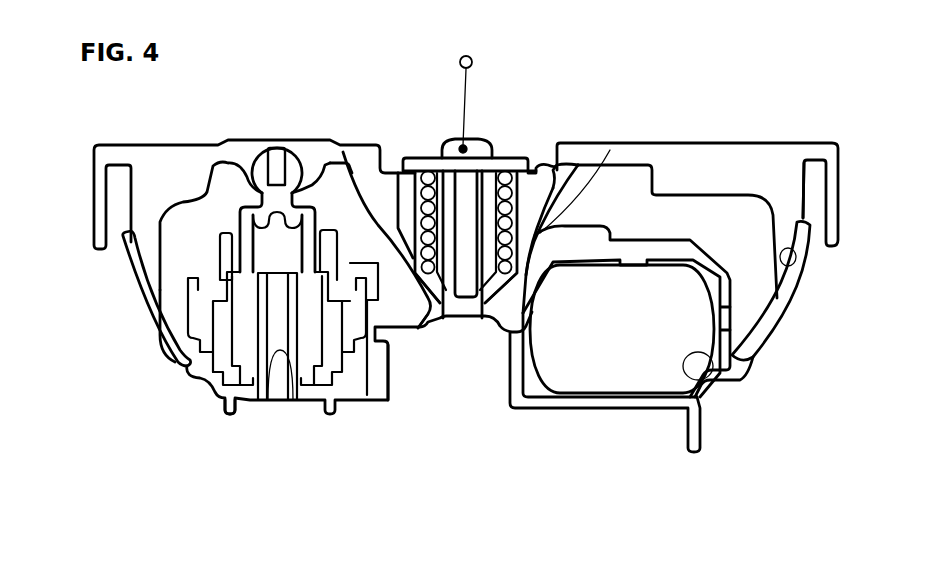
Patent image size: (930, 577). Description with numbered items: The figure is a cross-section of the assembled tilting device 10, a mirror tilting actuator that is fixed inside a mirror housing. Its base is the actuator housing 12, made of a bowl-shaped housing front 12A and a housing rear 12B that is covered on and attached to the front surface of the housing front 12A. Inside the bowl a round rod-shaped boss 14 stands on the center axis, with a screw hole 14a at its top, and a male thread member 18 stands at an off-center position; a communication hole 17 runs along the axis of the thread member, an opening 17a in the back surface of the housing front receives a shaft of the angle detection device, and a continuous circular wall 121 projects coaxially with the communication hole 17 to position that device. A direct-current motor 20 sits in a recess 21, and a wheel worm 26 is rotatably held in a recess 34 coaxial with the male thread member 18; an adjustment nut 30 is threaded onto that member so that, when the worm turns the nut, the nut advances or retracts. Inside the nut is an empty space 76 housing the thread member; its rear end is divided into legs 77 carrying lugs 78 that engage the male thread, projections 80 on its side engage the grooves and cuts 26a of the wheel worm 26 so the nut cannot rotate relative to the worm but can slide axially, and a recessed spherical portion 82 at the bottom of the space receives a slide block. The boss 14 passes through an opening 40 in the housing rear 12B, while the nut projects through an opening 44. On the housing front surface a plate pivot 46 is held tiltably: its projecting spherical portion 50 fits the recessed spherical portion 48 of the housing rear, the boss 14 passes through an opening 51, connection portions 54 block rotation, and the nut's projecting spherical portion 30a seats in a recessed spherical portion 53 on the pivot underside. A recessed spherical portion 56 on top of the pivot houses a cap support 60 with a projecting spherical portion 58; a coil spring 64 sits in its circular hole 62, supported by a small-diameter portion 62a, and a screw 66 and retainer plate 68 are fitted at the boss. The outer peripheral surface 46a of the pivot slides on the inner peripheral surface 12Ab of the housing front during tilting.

The tilting device 10 is at (791, 74).
The actuator housing 12 is at (708, 309).
The housing front 12A is at (763, 352).
The housing rear 12B is at (728, 285).
The inner peripheral surface 12Ab is at (794, 268).
The boss 14 is at (445, 220).
The screw hole 14a is at (470, 300).
The communication hole 17 is at (278, 400).
The opening 17a is at (278, 352).
The male thread member 18 is at (306, 400).
The motor 20 is at (617, 352).
The recess 21 is at (712, 377).
The wheel worm 26 is at (193, 386).
The grooves and cuts 26a is at (336, 290).
The adjustment nut 30 is at (247, 242).
The projecting spherical portion 30a is at (288, 167).
The recess 34 is at (222, 417).
The opening 40 is at (433, 333).
The opening 44 is at (327, 232).
The plate pivot 46 is at (683, 152).
The outer peripheral surface 46a is at (803, 207).
The recessed spherical portion 48 is at (538, 250).
The projecting spherical portion 50 is at (611, 163).
The opening 51 is at (392, 290).
The recessed spherical portion 53 is at (257, 150).
The connection portion 54 is at (343, 152).
The recessed spherical portion 56 is at (541, 162).
The projecting spherical portion 58 is at (577, 128).
The cap support 60 is at (397, 197).
The circular hole 62 is at (425, 197).
The small-diameter portion 62a is at (437, 333).
The coil spring 64 is at (499, 152).
The screw 66 is at (477, 142).
The retainer plate 68 is at (517, 140).
The empty space 76 is at (215, 355).
The leg 77 is at (229, 413).
The lug 78 is at (265, 395).
The projection 80 is at (315, 360).
The recessed spherical portion 82 is at (222, 278).
The wall 121 is at (226, 420).